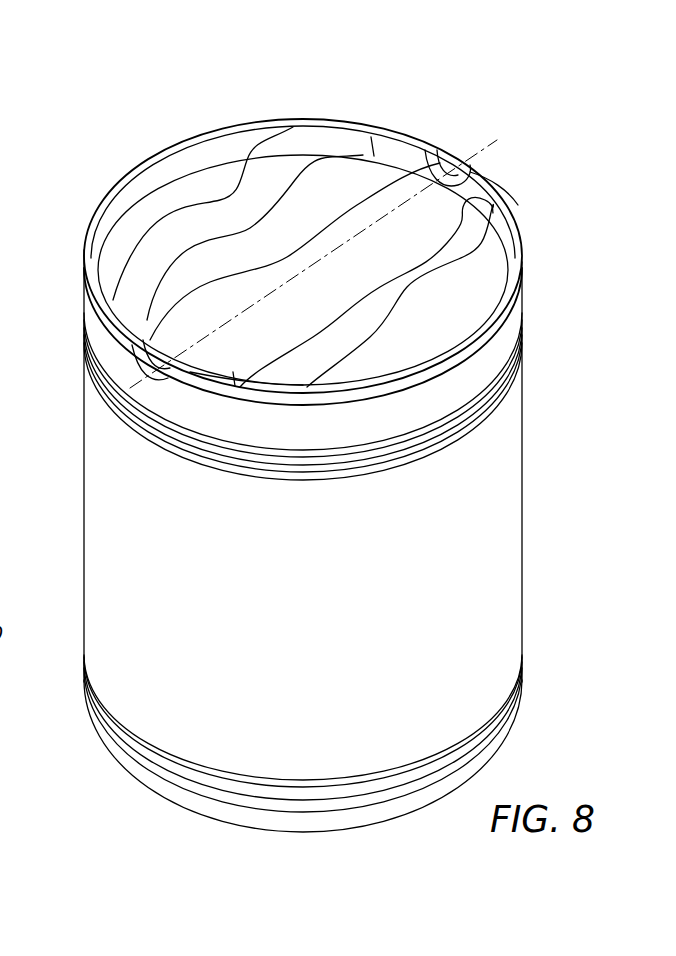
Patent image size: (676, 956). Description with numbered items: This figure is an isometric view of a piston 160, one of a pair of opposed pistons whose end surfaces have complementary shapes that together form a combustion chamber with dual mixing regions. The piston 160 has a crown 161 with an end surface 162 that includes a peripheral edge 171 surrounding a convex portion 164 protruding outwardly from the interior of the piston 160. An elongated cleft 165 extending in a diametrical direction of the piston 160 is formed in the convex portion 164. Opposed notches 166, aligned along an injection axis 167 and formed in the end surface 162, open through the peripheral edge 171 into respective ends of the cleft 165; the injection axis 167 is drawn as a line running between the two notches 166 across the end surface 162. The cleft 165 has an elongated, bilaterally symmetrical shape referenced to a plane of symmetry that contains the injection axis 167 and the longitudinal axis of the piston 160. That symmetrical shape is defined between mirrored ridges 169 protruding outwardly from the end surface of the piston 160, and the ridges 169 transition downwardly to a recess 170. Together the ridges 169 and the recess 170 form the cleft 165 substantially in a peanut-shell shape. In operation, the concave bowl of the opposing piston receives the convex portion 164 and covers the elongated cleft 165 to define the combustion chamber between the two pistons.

The piston 160 is at (528, 529).
The crown 161 is at (520, 305).
The end surface 162 is at (357, 120).
The convex portion 164 is at (195, 183).
The elongated cleft 165 is at (407, 190).
The opposed notches 166 is at (440, 170).
The injection axis 167 is at (365, 228).
The mirrored ridges 169 is at (162, 208).
The recess 170 is at (257, 335).
The peripheral edge 171 is at (495, 193).